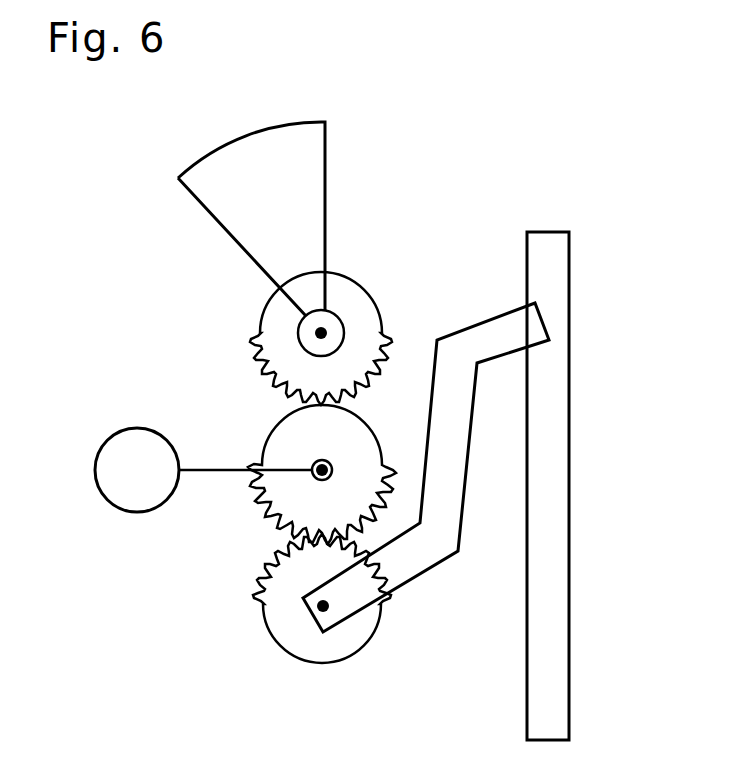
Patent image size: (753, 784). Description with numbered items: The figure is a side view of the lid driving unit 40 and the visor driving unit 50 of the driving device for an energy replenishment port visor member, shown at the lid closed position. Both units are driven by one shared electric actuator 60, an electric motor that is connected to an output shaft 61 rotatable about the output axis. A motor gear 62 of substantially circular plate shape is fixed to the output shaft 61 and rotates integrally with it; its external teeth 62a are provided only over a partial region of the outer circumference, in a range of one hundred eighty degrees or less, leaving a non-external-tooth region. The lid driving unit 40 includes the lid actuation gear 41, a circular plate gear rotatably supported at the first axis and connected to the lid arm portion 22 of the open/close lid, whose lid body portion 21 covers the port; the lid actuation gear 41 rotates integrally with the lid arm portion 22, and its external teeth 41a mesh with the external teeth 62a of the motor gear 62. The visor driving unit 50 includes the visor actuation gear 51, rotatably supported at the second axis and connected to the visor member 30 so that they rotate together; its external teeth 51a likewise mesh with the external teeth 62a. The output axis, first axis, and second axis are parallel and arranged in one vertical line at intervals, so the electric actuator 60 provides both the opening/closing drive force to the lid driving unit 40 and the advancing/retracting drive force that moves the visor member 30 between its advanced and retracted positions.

The lid body portion 21 is at (548, 515).
The lid arm portion 22 is at (425, 550).
The visor member 30 is at (308, 168).
The lid driving unit 40 is at (264, 641).
The lid actuation gear 41 is at (255, 639).
The external teeth 41a is at (253, 590).
The visor driving unit 50 is at (252, 292).
The visor actuation gear 51 is at (287, 302).
The external teeth 51a is at (253, 342).
The electric actuator 60 is at (100, 488).
The output shaft 61 is at (330, 462).
The motor gear 62 is at (264, 463).
The external teeth 62a is at (243, 513).